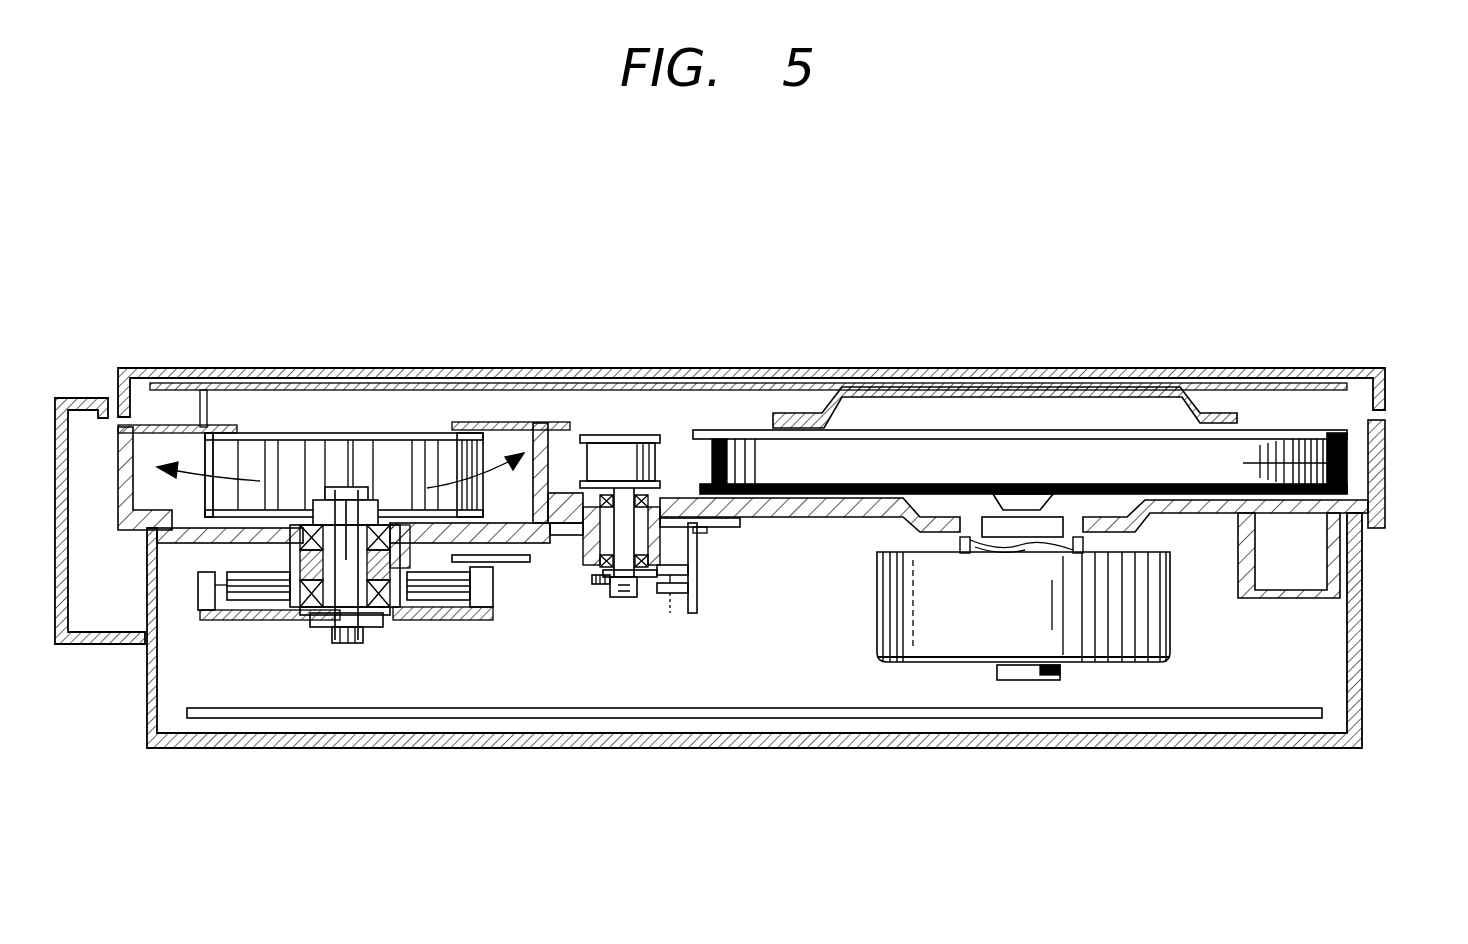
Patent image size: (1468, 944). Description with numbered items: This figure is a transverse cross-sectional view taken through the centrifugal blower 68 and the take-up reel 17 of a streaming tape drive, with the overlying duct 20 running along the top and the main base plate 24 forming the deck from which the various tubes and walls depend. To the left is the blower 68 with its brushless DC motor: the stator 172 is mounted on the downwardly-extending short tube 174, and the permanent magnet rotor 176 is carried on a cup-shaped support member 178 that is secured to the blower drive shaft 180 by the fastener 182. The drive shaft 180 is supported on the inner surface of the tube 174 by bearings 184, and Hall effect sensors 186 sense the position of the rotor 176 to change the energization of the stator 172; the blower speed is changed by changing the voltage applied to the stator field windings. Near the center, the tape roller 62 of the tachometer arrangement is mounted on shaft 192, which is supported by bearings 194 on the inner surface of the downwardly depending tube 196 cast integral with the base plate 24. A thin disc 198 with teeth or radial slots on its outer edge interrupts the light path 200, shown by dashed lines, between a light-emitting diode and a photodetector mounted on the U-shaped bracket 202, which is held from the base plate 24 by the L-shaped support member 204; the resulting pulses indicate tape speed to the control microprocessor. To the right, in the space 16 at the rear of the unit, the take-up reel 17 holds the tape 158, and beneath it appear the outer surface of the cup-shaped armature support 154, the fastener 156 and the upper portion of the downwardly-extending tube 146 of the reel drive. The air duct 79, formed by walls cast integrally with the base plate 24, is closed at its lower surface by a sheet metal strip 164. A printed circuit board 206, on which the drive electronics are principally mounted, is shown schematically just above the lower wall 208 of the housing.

The space 16 is at (753, 410).
The take-up reel 17 is at (873, 427).
The duct 20 is at (200, 412).
The base plate 24 is at (812, 502).
The tape roller 62 is at (617, 445).
The centrifugal blower 68 is at (345, 447).
The air duct 79 is at (1293, 557).
The downwardly-extending tube 146 is at (1085, 550).
The cup-shaped armature support 154 is at (1170, 655).
The fastener 156 is at (1010, 680).
The tape 158 is at (1327, 463).
The sheet metal strip 164 is at (1310, 598).
The stator 172 is at (258, 605).
The downwardly-extending short tube 174 is at (297, 566).
The permanent magnet rotor 176 is at (480, 588).
The cup-shaped support member 178 is at (420, 613).
The blower drive shaft 180 is at (340, 645).
The fastener 182 is at (337, 644).
The bearings 184 is at (490, 420).
The Hall effect sensors 186 is at (420, 601).
The shaft 192 is at (673, 497).
The bearings 194 is at (640, 510).
The downwardly depending tube 196 is at (665, 534).
The thin disc 198 is at (583, 582).
The light path 200 is at (670, 613).
The U-shaped bracket 202 is at (688, 590).
The L-shaped support member 204 is at (690, 566).
The printed circuit board 206 is at (1080, 708).
The lower wall 208 is at (1010, 748).